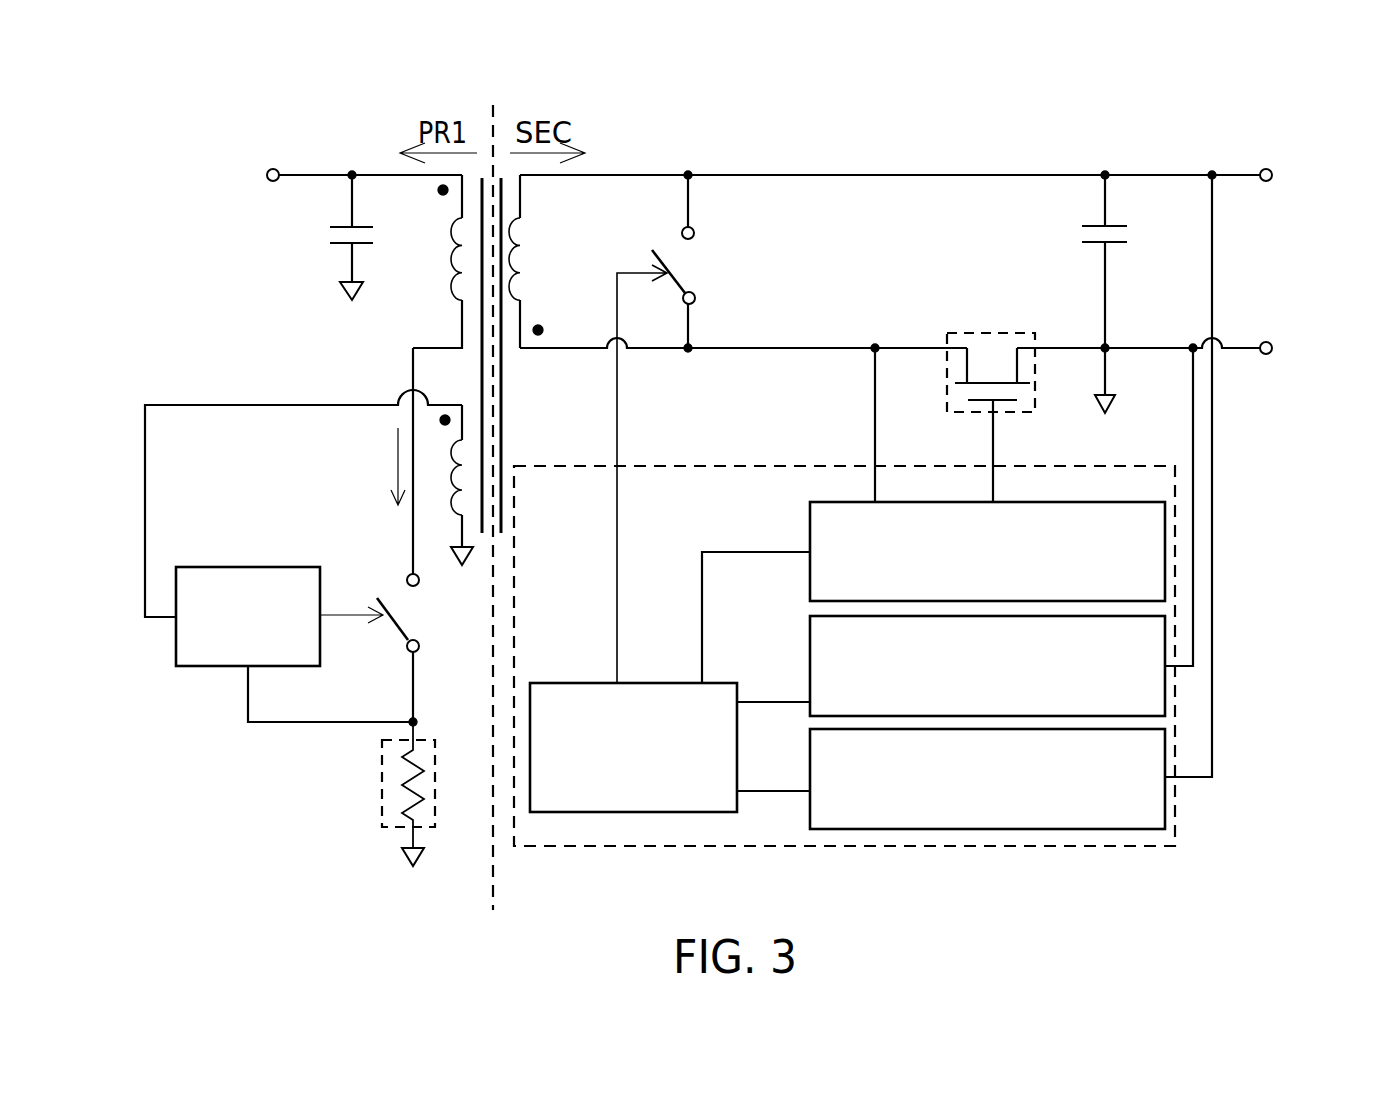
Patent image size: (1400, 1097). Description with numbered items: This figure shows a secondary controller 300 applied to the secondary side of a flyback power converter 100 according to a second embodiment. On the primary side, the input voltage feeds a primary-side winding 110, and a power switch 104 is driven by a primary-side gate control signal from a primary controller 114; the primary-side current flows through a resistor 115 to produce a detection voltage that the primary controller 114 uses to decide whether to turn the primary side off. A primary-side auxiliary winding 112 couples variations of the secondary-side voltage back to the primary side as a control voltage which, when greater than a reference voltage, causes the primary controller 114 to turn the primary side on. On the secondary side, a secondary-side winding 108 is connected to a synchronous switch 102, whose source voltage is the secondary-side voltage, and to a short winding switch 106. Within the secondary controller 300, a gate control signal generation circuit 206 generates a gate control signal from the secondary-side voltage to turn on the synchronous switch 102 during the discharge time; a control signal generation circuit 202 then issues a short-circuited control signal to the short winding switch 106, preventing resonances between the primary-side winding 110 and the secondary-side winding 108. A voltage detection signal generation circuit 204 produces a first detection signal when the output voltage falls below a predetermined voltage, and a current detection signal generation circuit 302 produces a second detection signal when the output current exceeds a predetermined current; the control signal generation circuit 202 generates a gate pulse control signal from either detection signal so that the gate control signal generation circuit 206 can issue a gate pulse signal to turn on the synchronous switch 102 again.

The power converter 100 is at (197, 148).
The synchronous switch 102 is at (992, 333).
The power switch 104 is at (405, 618).
The short winding switch 106 is at (707, 263).
The secondary-side winding 108 is at (530, 243).
The primary-side winding 110 is at (448, 280).
The primary-side auxiliary winding 112 is at (433, 497).
The primary controller 114 is at (250, 565).
The resistor 115 is at (382, 770).
The control signal generation circuit 202 is at (652, 815).
The voltage detection signal generation circuit 204 is at (933, 832).
The gate control signal generation circuit 206 is at (1165, 567).
The secondary controller 300 is at (762, 463).
The current detection signal generation circuit 302 is at (1165, 693).